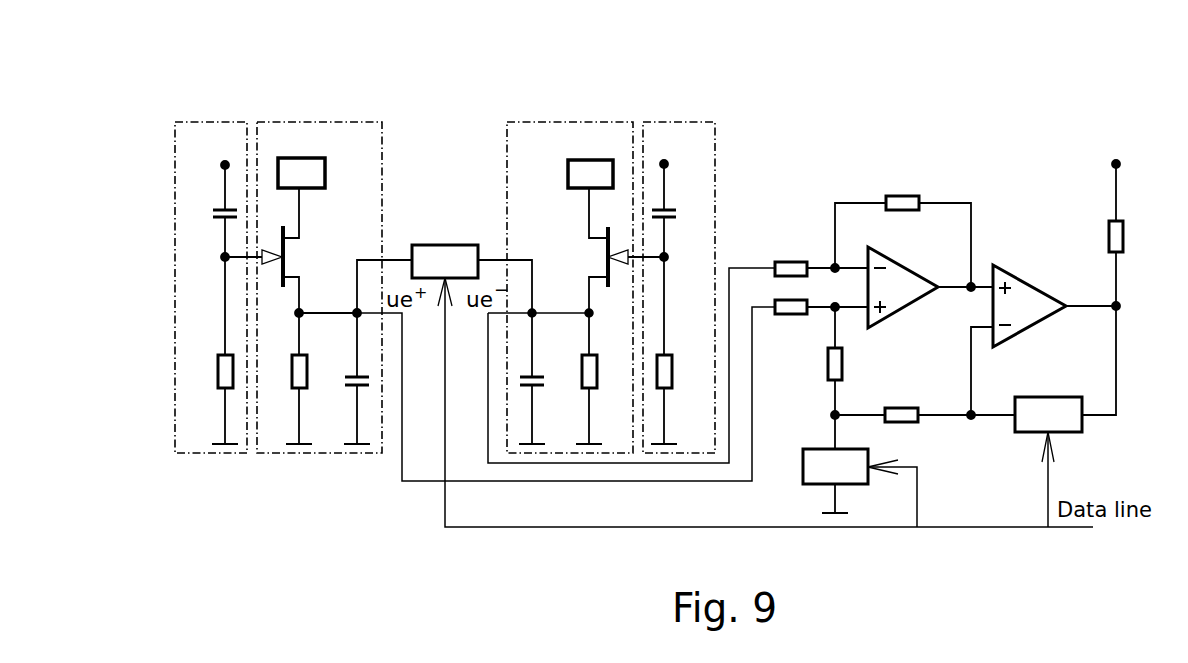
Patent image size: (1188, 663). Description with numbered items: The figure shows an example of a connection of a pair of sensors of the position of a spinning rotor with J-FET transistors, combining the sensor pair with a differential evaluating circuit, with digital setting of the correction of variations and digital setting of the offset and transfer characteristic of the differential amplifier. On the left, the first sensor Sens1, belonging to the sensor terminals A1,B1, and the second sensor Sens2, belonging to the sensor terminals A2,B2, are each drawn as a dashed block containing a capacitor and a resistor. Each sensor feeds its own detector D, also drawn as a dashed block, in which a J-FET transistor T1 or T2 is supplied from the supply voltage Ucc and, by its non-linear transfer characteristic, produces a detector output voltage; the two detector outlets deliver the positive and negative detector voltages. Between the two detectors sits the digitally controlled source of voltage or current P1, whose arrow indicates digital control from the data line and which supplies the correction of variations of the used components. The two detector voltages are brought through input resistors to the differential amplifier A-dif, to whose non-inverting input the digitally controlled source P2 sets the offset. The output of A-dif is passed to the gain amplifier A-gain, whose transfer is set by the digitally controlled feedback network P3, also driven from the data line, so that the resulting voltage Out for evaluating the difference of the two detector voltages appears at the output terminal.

The first position sensor A1,B1 is at (213, 128).
The second position sensor A2,B2 is at (683, 128).
The detector D is at (329, 133).
The first sensor Sens1 is at (228, 287).
The second sensor Sens2 is at (679, 287).
The first transistor T1 is at (302, 250).
The second transistor T2 is at (614, 250).
The supply voltage Ucc is at (445, 173).
The digitally controlled source of voltage or current P1 is at (741, 370).
The digitally controlled source of voltage or current P2 is at (842, 474).
The digitally controlled feedback network P3 is at (1048, 447).
The differential amplifier A-dif is at (884, 262).
The gain amplifier A-gain is at (1056, 301).
The resulting voltage Out is at (1107, 275).